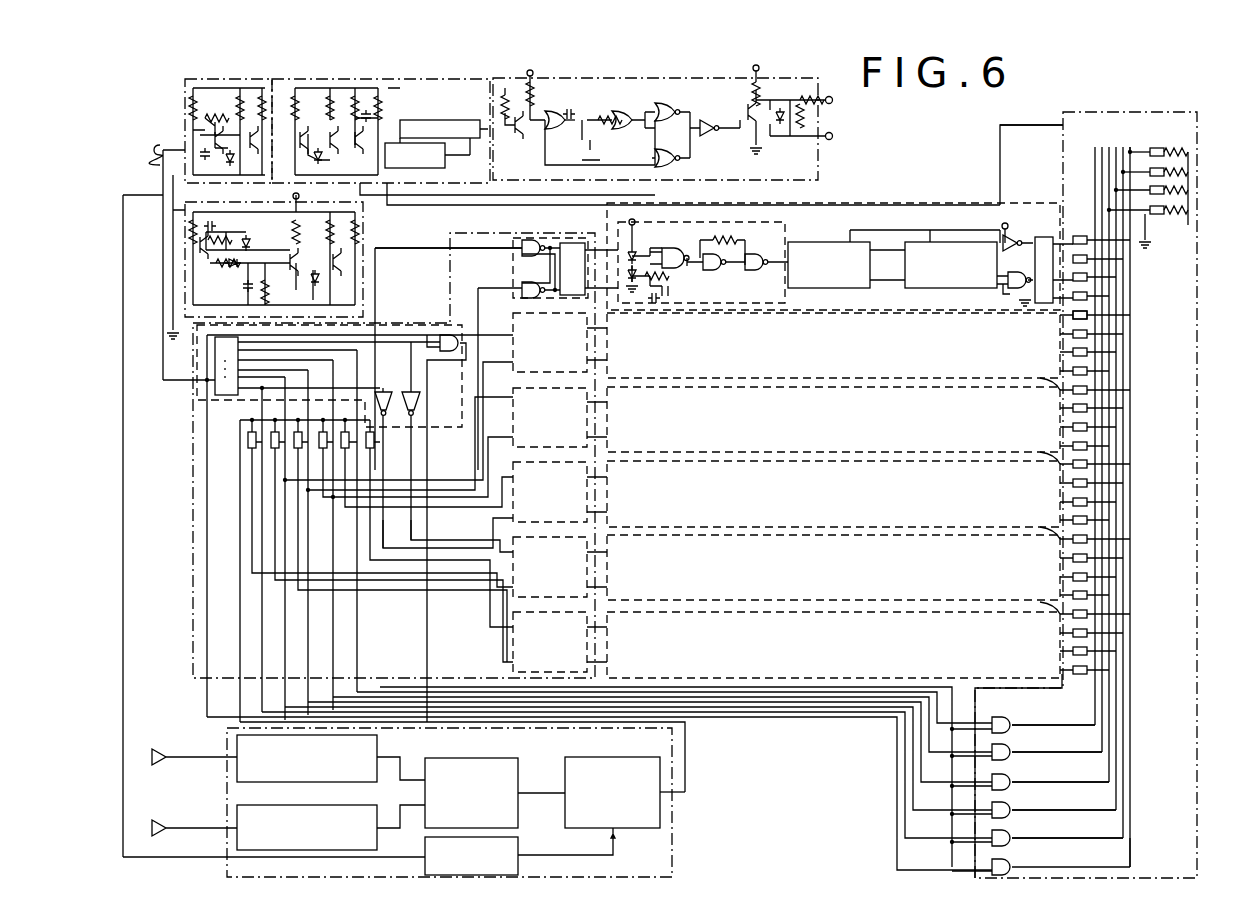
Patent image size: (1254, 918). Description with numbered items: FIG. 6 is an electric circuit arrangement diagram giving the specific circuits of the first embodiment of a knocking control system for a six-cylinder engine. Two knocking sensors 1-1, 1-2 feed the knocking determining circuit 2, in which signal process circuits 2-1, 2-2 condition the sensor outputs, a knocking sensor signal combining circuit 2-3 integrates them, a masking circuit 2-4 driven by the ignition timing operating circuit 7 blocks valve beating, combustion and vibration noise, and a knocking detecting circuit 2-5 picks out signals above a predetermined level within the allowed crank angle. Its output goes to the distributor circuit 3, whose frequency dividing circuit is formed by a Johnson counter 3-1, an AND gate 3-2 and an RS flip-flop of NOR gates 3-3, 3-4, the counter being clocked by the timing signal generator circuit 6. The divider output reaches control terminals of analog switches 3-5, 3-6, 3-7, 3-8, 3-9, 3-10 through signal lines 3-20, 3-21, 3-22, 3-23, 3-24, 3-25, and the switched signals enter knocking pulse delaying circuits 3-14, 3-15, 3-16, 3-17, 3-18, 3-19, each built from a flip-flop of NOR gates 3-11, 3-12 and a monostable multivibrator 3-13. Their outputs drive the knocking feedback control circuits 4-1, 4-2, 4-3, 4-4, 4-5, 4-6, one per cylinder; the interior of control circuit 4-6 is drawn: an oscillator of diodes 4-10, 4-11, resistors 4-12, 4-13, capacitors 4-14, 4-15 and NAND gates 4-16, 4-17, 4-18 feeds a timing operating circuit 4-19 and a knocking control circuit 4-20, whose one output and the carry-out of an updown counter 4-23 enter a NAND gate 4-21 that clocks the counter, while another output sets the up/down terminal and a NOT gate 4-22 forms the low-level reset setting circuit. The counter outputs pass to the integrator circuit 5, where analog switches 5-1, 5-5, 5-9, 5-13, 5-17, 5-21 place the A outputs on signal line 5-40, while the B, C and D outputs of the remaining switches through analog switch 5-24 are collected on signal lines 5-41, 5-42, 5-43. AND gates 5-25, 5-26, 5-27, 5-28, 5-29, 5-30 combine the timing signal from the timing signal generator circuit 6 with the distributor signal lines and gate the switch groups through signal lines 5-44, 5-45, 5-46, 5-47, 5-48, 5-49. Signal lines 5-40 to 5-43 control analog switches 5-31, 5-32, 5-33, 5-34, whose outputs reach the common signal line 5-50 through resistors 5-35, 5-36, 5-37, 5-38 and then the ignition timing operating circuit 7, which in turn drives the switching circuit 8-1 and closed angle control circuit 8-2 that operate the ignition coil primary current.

The knocking sensor 1-1 is at (157, 749).
The knocking sensor 1-2 is at (157, 820).
The knocking determining circuit 2 is at (674, 806).
The signal process circuit 2-1 is at (331, 758).
The signal process circuit 2-2 is at (331, 827).
The knocking sensor signal combining circuit 2-3 is at (495, 793).
The masking circuit 2-4 is at (369, 851).
The knocking detecting circuit 2-5 is at (625, 792).
The distributor circuit 3 is at (193, 453).
The Johnson counter 3-1 is at (215, 360).
The AND gate 3-2 is at (450, 353).
The NOR gate 3-3 is at (382, 388).
The NOR gate 3-4 is at (420, 396).
The analog switch 3-5 is at (248, 442).
The analog switch 3-6 is at (275, 448).
The analog switch 3-7 is at (298, 448).
The analog switch 3-8 is at (323, 448).
The analog switch 3-9 is at (345, 448).
The analog switch 3-10 is at (374, 444).
The NOR gate 3-11 is at (538, 240).
The NOR gate 3-12 is at (520, 286).
The monostable multivibrator 3-13 is at (572, 234).
The knocking pulse delaying circuit 3-14 is at (560, 642).
The knocking pulse delaying circuit 3-15 is at (560, 567).
The knocking pulse delaying circuit 3-16 is at (560, 492).
The knocking pulse delaying circuit 3-17 is at (560, 417).
The knocking pulse delaying circuit 3-18 is at (560, 342).
The knocking pulse delaying circuit 3-19 is at (522, 256).
The signal line 3-20 is at (428, 252).
The signal line 3-21 is at (285, 505).
The signal line 3-22 is at (308, 520).
The signal line 3-23 is at (333, 530).
The signal line 3-24 is at (411, 535).
The signal line 3-25 is at (383, 525).
The knocking feedback control circuit 4-1 is at (833, 645).
The knocking feedback control circuit 4-2 is at (833, 567).
The knocking feedback control circuit 4-3 is at (833, 494).
The knocking feedback control circuit 4-4 is at (833, 419).
The knocking feedback control circuit 4-5 is at (833, 345).
The knocking feedback control circuit 4-6 is at (780, 212).
The diode 4-10 is at (640, 255).
The diode 4-11 is at (628, 278).
The resistor 4-12 is at (638, 285).
The resistor 4-13 is at (722, 238).
The capacitor 4-14 is at (660, 284).
The capacitor 4-15 is at (690, 296).
The NAND gate 4-16 is at (680, 244).
The NAND gate 4-17 is at (715, 275).
The NAND gate 4-18 is at (758, 276).
The timing operating circuit 4-19 is at (846, 265).
The knocking control circuit 4-20 is at (951, 265).
The NAND gate 4-21 is at (1012, 290).
The NOT gate 4-22 is at (1010, 235).
The updown counter 4-23 is at (1044, 237).
The integrator circuit 5 is at (1088, 113).
The analog switch 5-1 is at (1073, 240).
The analog switch 5-5 is at (1087, 315).
The analog switch 5-9 is at (1060, 390).
The analog switch 5-13 is at (1060, 464).
The analog switch 5-17 is at (1060, 539).
The analog switch 5-21 is at (1060, 614).
The analog switch 5-24 is at (1064, 682).
The AND gate 5-25 is at (1006, 722).
The AND gate 5-26 is at (1008, 752).
The AND gate 5-27 is at (1008, 782).
The AND gate 5-28 is at (1008, 810).
The AND gate 5-29 is at (1008, 838).
The AND gate 5-30 is at (1008, 867).
The analog switch 5-31 is at (1155, 148).
The analog switch 5-32 is at (1165, 172).
The analog switch 5-33 is at (1165, 190).
The analog switch 5-34 is at (1150, 214).
The resistor 5-35 is at (1175, 152).
The resistor 5-36 is at (1178, 172).
The resistor 5-37 is at (1178, 190).
The resistor 5-38 is at (1178, 210).
The signal line 5-40 is at (1130, 152).
The signal line 5-41 is at (1123, 172).
The signal line 5-42 is at (1118, 184).
The signal line 5-43 is at (1118, 205).
The signal line 5-44 is at (1055, 727).
The signal line 5-45 is at (1055, 754).
The signal line 5-46 is at (1055, 784).
The signal line 5-47 is at (1055, 812).
The signal line 5-48 is at (1055, 840).
The signal line 5-49 is at (1116, 832).
The signal line 5-50 is at (1000, 130).
The timing signal generator circuit 6 is at (246, 80).
The ignition timing operating circuit 7 is at (382, 80).
The switching circuit 8-1 is at (185, 212).
The closed angle control circuit 8-2 is at (641, 79).